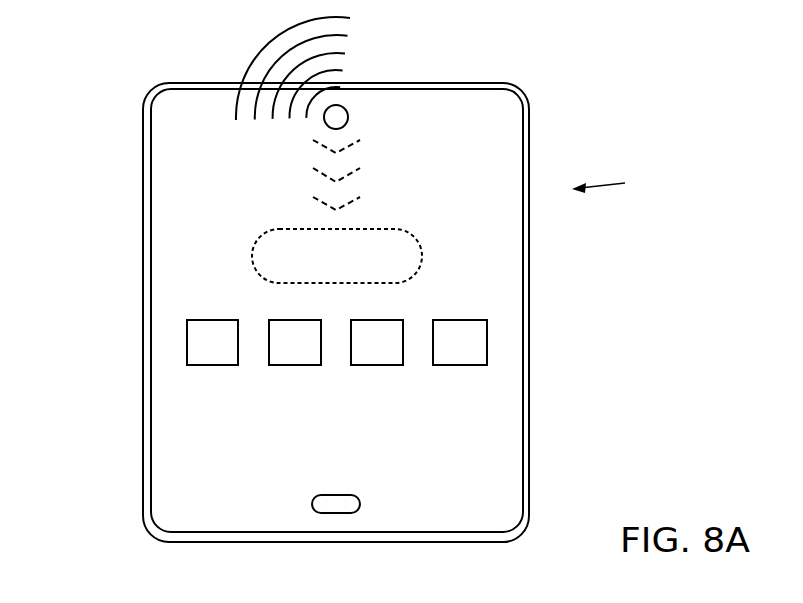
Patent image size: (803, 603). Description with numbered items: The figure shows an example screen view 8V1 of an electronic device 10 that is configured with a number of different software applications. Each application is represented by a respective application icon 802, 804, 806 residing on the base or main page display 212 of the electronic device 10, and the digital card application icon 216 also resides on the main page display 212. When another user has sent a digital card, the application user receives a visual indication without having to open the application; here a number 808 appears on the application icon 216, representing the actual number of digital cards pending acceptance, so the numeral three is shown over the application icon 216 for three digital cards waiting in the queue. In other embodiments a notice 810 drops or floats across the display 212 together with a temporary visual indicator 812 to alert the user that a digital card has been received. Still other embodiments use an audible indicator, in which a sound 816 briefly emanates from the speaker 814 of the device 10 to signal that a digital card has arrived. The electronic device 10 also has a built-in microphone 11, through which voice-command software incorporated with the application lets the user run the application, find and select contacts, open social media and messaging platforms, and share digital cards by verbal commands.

The electronic device 10 is at (143, 190).
The main page display 212 is at (168, 249).
The sound 816 is at (260, 53).
The speaker 814 is at (348, 117).
The notice 810 is at (358, 169).
The temporary visual indicator 812 is at (268, 232).
The application icon 802 is at (203, 343).
The application icon 804 is at (297, 357).
The application icon 806 is at (377, 355).
The number 808 is at (466, 343).
The application icon 216 is at (472, 358).
The built-in microphone 11 is at (348, 505).
The screen view 8V1 is at (622, 185).